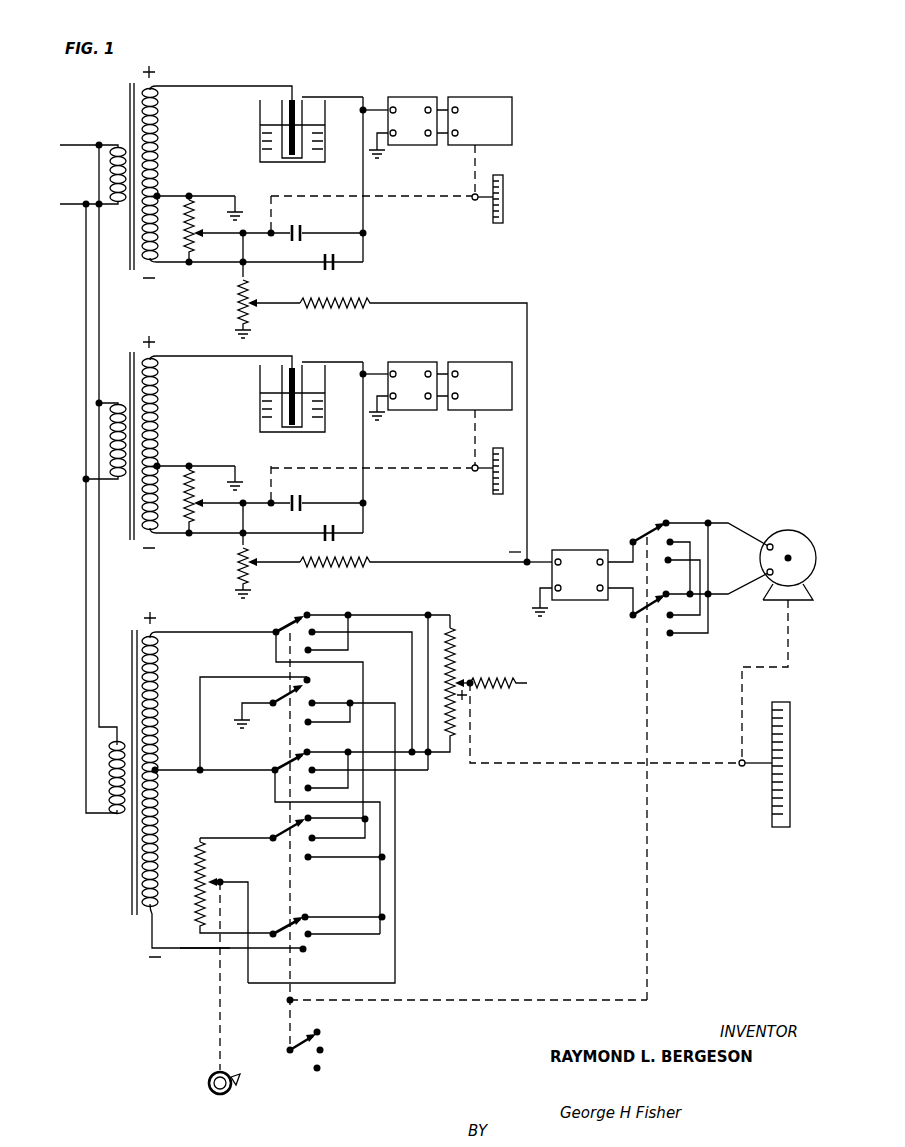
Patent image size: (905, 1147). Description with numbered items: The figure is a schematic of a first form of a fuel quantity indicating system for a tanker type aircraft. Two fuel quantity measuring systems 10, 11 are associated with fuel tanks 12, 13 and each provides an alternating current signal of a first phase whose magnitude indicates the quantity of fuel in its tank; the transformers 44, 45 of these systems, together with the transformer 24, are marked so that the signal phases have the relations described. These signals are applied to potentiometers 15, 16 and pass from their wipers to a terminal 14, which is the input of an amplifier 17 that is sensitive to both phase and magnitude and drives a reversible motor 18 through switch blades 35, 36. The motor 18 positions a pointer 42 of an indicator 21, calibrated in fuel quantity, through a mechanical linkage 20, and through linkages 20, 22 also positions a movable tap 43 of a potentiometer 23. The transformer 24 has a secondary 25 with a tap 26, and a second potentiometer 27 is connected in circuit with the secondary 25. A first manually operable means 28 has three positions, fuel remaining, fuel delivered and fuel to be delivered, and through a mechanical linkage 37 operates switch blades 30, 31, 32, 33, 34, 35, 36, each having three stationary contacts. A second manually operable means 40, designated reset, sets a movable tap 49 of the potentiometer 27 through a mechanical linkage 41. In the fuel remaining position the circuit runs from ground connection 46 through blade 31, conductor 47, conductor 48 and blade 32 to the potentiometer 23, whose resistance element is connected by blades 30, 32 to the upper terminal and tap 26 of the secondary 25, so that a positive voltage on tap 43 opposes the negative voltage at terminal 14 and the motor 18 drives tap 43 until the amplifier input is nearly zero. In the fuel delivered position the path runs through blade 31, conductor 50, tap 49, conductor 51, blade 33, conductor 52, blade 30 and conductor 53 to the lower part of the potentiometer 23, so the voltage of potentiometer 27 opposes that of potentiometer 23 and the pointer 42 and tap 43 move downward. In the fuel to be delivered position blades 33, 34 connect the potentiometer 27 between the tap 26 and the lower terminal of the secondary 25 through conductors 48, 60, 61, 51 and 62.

The fuel quantity measuring system 10 is at (477, 94).
The fuel quantity measuring system 11 is at (399, 345).
The fuel tank 12 is at (258, 150).
The fuel tank 13 is at (258, 420).
The terminal 14 is at (529, 559).
The potentiometer 15 is at (240, 293).
The potentiometer 16 is at (240, 562).
The amplifier 17 is at (580, 550).
The reversible motor 18 is at (786, 530).
The mechanical linkage 20 is at (765, 667).
The indicator 21 is at (764, 774).
The mechanical linkage 22 is at (562, 762).
The potentiometer 23 is at (462, 658).
The transformer 24 is at (122, 652).
The secondary 25 is at (157, 697).
The tap 26 is at (160, 773).
The second potentiometer 27 is at (185, 871).
The first manually operable means 28 is at (289, 1056).
The switch blade 30 is at (356, 711).
The switch blade 31 is at (270, 700).
The switch blade 32 is at (272, 768).
The switch blade 33 is at (284, 836).
The switch blade 34 is at (292, 921).
The switch blade 35 is at (647, 537).
The switch blade 36 is at (644, 624).
The mechanical linkage 37 is at (290, 1022).
The second manually operable means 40 is at (220, 1095).
The mechanical linkage 41 is at (218, 1005).
The pointer 42 is at (757, 760).
The movable tap 43 is at (471, 680).
The transformer 44 is at (122, 127).
The transformer 45 is at (122, 377).
The ground connection 46 is at (252, 722).
The conductor 47 is at (199, 735).
The conductor 48 is at (229, 769).
The movable tap 49 is at (216, 880).
The conductor 50 is at (384, 703).
The conductor 51 is at (243, 837).
The conductor 52 is at (325, 840).
The conductor 53 is at (372, 633).
The conductor 60 is at (275, 801).
The conductor 61 is at (352, 860).
The conductor 62 is at (200, 948).